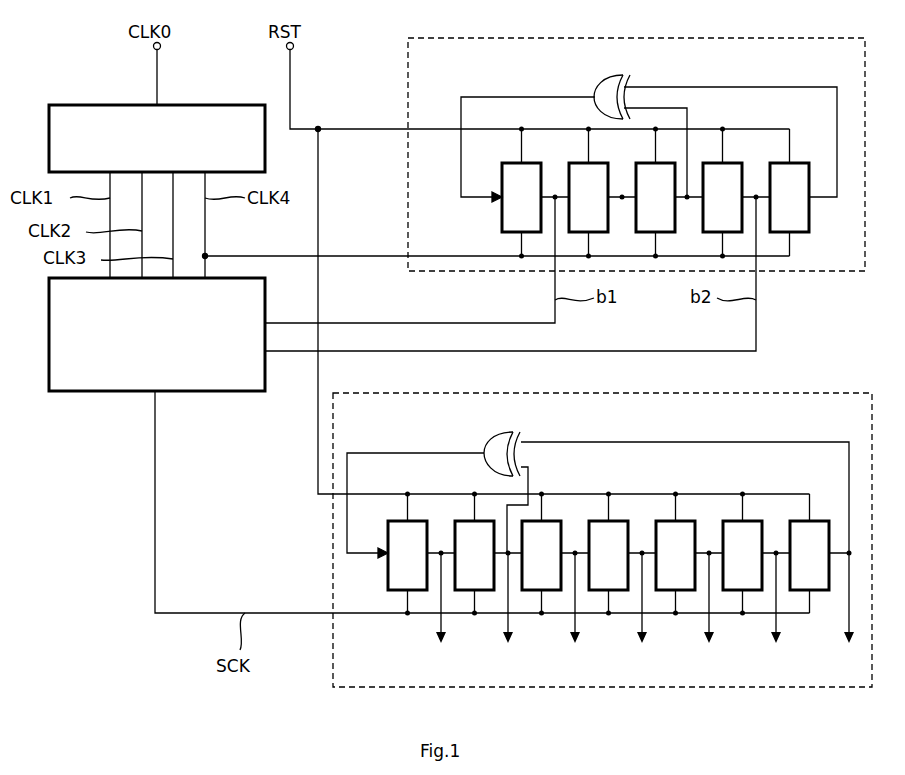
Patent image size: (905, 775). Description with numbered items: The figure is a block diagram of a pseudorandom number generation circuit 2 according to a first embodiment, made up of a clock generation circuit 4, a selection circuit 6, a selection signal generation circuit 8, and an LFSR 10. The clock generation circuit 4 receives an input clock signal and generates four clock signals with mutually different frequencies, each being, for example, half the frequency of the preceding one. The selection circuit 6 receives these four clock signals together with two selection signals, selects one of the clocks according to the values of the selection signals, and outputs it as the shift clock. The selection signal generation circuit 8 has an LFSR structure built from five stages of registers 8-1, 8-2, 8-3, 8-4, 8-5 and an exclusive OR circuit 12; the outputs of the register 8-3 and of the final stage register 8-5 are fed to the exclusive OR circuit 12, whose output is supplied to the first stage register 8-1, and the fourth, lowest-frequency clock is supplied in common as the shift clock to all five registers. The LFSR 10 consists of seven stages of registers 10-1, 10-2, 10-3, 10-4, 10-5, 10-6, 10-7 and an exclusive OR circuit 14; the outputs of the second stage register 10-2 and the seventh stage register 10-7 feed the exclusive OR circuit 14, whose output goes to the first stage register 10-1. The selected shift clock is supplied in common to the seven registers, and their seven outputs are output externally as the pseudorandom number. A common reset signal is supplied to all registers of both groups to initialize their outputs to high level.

The pseudorandom number generation circuit 2 is at (125, 582).
The clock generation circuit 4 is at (205, 105).
The selection circuit 6 is at (215, 391).
The selection signal generation circuit 8 is at (408, 70).
The first stage register 8-1 is at (510, 163).
The register 8-2 is at (577, 163).
The second stage register 8-3 is at (664, 163).
The register 8-4 is at (730, 163).
The fifth stage register 8-5 is at (798, 163).
The LFSR 10 is at (333, 553).
The first stage register 10-1 is at (398, 521).
The second stage register 10-2 is at (465, 521).
The register 10-3 is at (549, 521).
The register 10-4 is at (617, 521).
The register 10-5 is at (684, 521).
The register 10-6 is at (751, 521).
The seventh stage register 10-7 is at (818, 521).
The exclusive OR circuit 12 is at (623, 74).
The exclusive OR circuit 14 is at (507, 431).